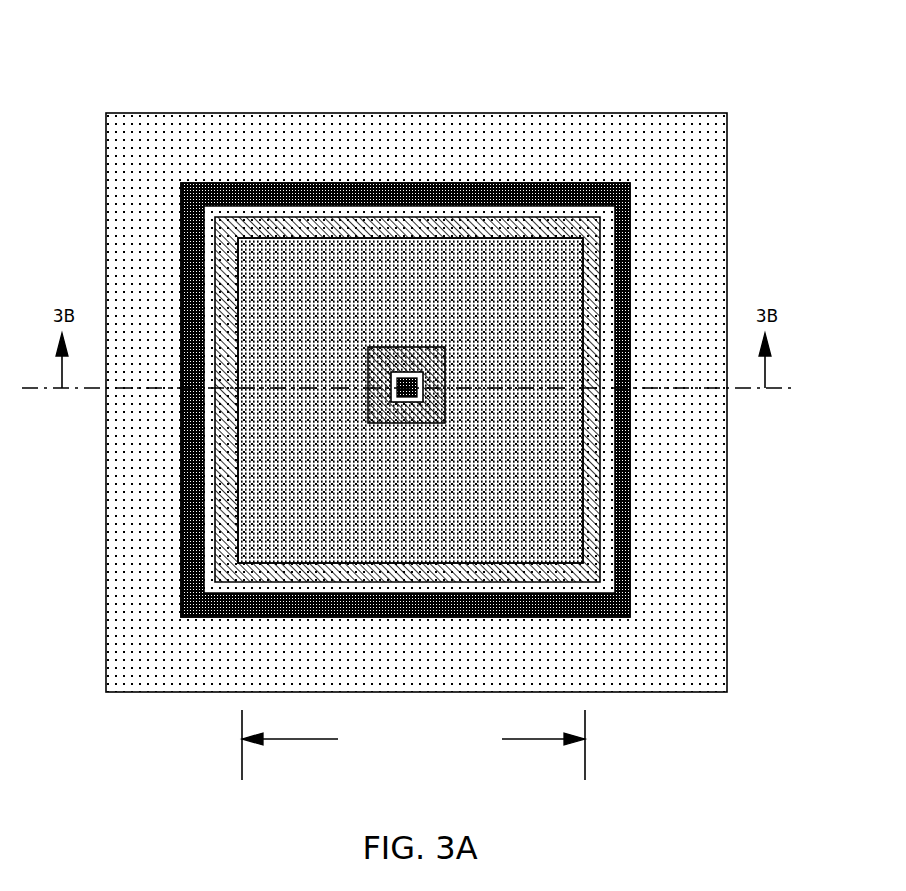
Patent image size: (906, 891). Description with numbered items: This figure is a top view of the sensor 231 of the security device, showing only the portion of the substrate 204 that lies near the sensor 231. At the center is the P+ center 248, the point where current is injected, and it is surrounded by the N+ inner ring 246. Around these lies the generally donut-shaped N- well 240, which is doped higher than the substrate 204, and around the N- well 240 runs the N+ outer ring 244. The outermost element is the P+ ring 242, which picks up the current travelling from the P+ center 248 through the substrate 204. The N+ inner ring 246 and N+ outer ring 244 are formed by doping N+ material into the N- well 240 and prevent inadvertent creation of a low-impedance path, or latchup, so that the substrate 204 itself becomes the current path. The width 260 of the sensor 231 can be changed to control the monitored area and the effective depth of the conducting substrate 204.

The substrate 204 is at (718, 180).
The sensor 231 is at (228, 173).
The P+ ring 242 is at (588, 187).
The N+ outer ring 244 is at (421, 228).
The N- well 240 is at (421, 315).
The N+ inner ring 246 is at (382, 423).
The P+ center 248 is at (418, 400).
The width 260 is at (413, 745).